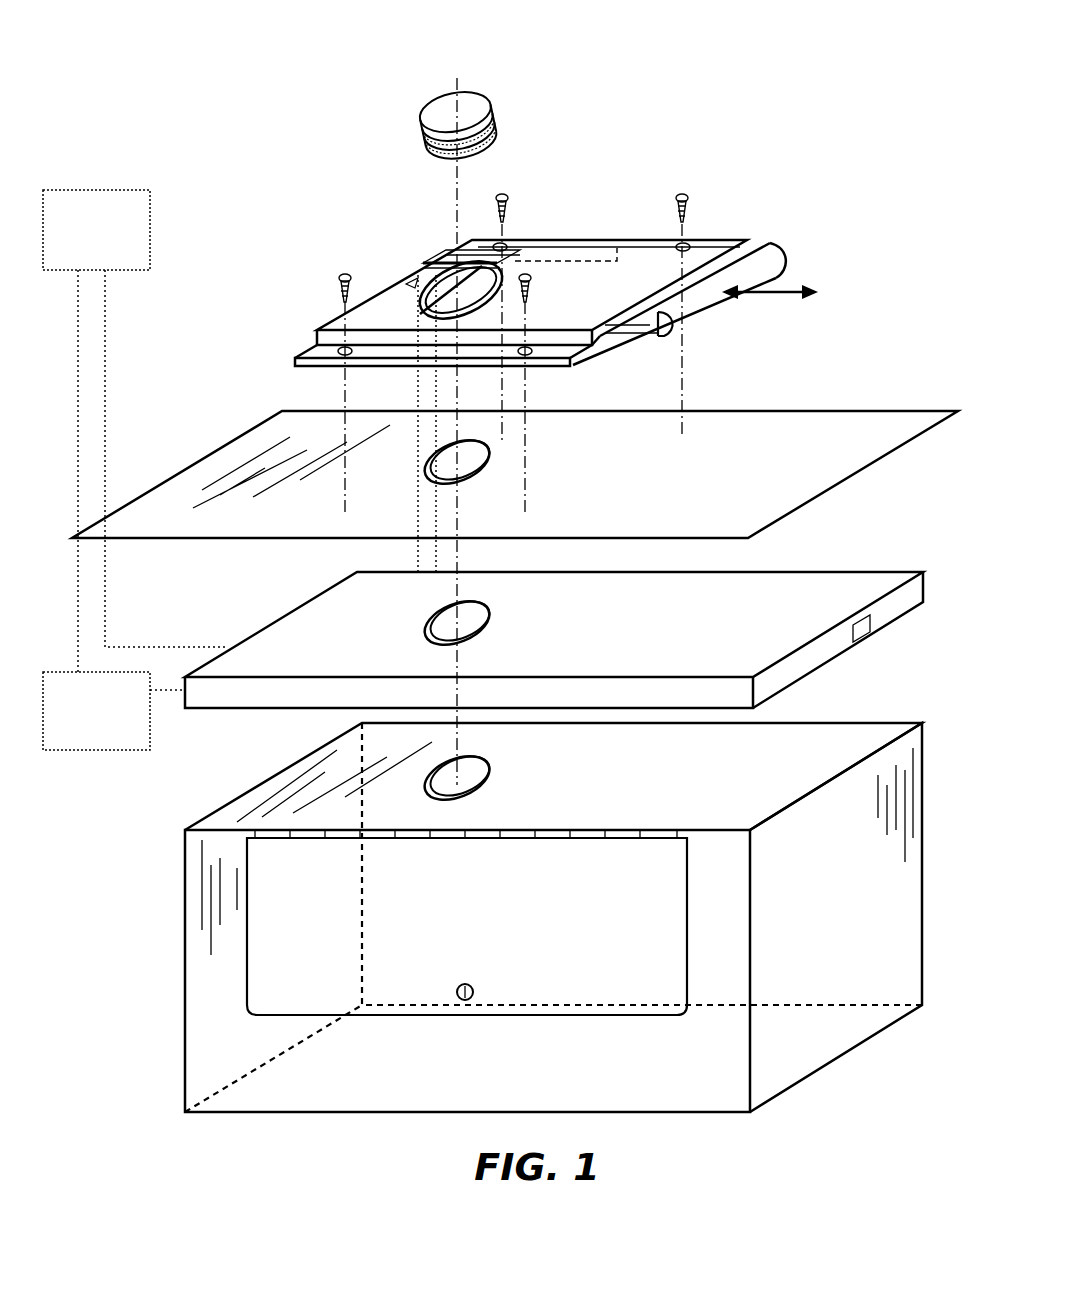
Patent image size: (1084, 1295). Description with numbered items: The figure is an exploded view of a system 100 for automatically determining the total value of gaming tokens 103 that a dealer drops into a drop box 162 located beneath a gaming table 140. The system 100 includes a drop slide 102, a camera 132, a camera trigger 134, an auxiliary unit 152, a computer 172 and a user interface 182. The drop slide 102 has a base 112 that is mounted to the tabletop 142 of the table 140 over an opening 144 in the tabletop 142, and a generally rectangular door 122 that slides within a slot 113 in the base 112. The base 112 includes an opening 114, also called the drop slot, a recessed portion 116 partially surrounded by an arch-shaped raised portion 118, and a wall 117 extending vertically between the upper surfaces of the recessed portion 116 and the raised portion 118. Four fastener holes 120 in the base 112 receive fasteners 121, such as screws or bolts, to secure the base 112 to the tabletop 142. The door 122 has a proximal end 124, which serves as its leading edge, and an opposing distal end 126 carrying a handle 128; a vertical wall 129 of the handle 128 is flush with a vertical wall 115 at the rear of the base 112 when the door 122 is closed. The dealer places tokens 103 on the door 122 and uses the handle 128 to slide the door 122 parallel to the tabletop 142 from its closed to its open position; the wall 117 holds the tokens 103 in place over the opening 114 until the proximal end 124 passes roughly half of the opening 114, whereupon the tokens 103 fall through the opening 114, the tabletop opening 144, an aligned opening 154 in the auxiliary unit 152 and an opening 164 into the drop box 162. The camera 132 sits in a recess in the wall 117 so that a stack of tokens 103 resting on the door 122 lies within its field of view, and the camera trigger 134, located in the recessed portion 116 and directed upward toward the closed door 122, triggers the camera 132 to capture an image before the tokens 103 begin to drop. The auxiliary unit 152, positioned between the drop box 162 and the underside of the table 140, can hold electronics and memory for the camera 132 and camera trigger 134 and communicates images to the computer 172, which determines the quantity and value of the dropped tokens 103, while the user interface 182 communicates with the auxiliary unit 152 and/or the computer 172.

The system 100 is at (494, 25).
The drop slide 102 is at (600, 130).
The tokens 103 is at (404, 90).
The base 112 is at (590, 245).
The slot 113 is at (594, 348).
The opening 114 is at (462, 262).
The vertical wall 115 is at (678, 335).
The recessed portion 116 is at (415, 286).
The wall 117 is at (558, 248).
The raised portion 118 is at (458, 262).
The fastener holes 120 is at (335, 348).
The fasteners 121 is at (338, 290).
The door 122 is at (618, 258).
The proximal end 124 is at (410, 300).
The distal end 126 is at (786, 275).
The handle 128 is at (782, 248).
The vertical wall of the handle 129 is at (656, 330).
The camera 132 is at (432, 262).
The camera trigger 134 is at (418, 262).
The gaming table 140 is at (885, 392).
The tabletop 142 is at (780, 412).
The opening 144 is at (488, 462).
The auxiliary unit 152 is at (866, 583).
The opening 154 is at (492, 622).
The drop box 162 is at (865, 738).
The opening 164 is at (492, 778).
The computer 172 is at (80, 724).
The user interface 182 is at (80, 244).